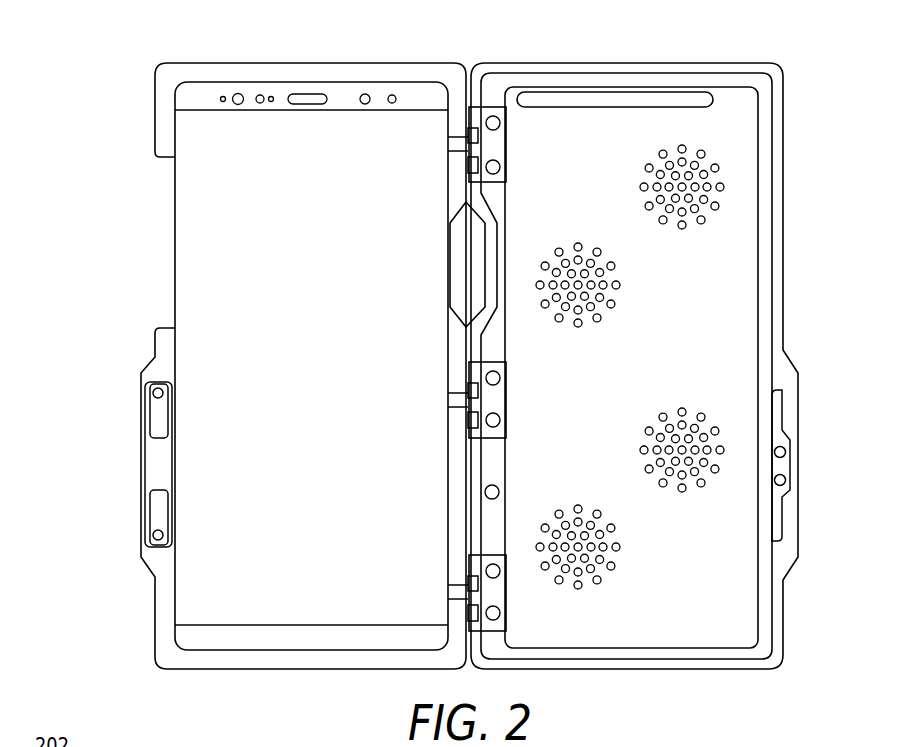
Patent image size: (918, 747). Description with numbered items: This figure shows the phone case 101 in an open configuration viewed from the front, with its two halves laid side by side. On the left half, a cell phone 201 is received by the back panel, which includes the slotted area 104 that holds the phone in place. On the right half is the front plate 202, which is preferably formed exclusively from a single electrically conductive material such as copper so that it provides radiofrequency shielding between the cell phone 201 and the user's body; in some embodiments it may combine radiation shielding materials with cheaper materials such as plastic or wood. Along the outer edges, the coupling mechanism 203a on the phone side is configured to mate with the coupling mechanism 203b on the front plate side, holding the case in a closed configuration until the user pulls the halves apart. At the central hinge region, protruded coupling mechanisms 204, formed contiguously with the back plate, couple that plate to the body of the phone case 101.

The phone case 101 is at (130, 56).
The slotted area 104 is at (165, 220).
The cell phone 201 is at (200, 593).
The front plate 202 is at (735, 268).
The coupling mechanism 203a is at (155, 458).
The coupling mechanism 203b is at (788, 466).
The protruded coupling mechanisms 204 is at (450, 593).